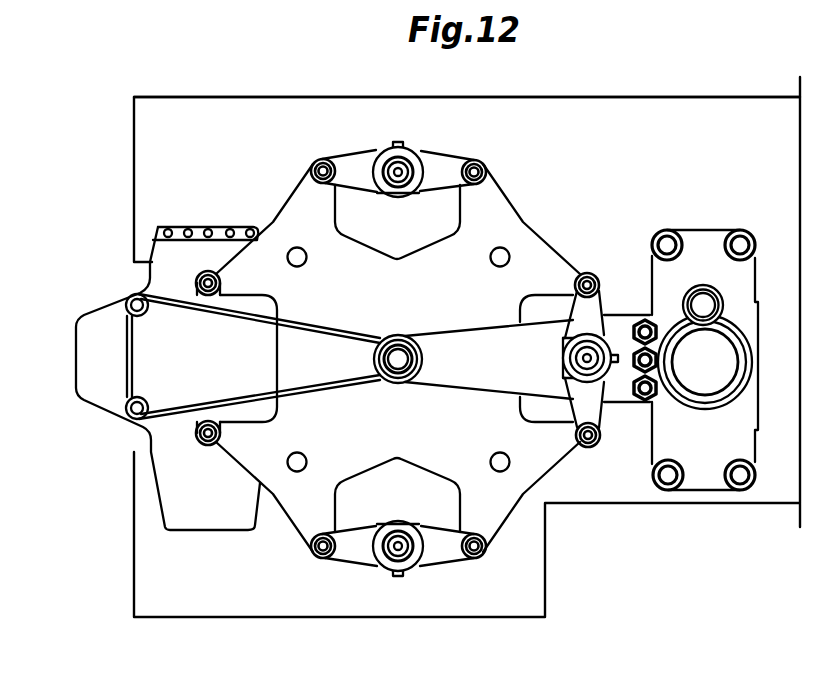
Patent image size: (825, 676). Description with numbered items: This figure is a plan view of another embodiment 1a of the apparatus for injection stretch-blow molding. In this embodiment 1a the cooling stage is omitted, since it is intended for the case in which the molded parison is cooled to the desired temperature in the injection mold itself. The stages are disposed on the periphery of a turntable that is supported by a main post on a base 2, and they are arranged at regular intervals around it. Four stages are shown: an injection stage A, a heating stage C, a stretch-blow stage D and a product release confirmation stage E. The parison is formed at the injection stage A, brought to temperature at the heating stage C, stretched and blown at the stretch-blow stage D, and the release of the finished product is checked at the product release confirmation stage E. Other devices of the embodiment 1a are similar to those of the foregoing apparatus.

The embodiment of the apparatus 1a is at (231, 90).
The base 2 is at (629, 122).
The injection stage A is at (722, 205).
The heating stage C is at (458, 138).
The stretch-blow stage D is at (67, 368).
The product release confirmation stage E is at (440, 606).